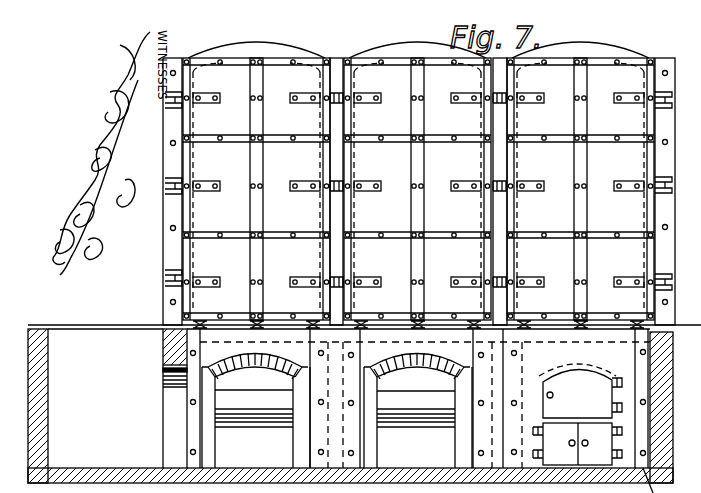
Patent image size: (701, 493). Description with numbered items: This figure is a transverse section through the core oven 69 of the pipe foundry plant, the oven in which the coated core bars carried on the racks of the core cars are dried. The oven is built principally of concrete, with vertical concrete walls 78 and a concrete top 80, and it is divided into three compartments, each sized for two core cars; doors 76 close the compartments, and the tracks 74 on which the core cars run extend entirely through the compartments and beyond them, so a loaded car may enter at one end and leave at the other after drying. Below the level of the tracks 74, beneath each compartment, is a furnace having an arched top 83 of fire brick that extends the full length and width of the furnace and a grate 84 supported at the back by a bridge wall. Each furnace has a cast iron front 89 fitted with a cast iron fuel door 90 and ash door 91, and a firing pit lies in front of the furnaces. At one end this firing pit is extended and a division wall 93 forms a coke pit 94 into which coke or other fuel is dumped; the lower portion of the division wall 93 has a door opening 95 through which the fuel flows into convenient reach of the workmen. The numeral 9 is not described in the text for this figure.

The corner post 9 is at (700, 297).
The core oven 69 is at (267, 44).
The tracks 74 is at (255, 321).
The doors 76 is at (418, 189).
The vertical concrete walls 78 is at (163, 255).
The concrete top 80 is at (585, 47).
The arched top 83 is at (236, 360).
The grate 84 is at (267, 418).
The cast iron front 89 is at (571, 361).
The fuel door 90 is at (582, 393).
The ash door 91 is at (577, 444).
The division wall 93 is at (165, 340).
The coke pit 94 is at (350, 406).
The door opening 95 is at (175, 420).